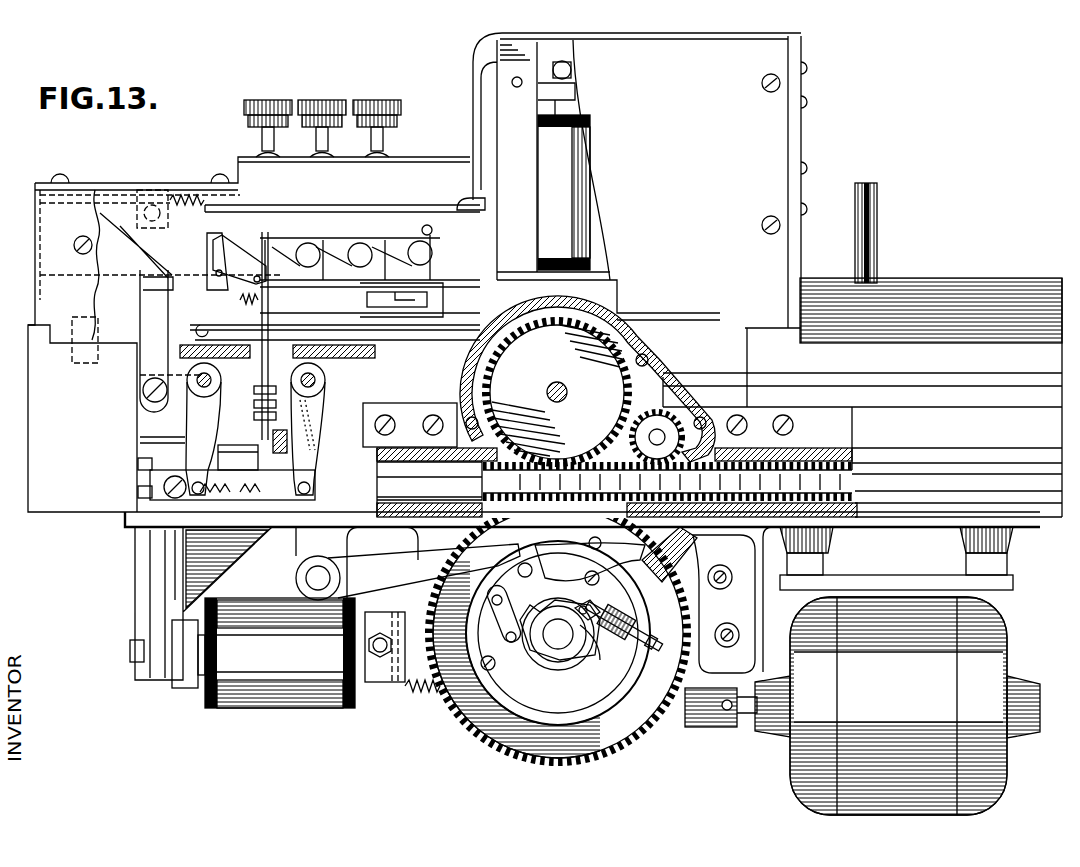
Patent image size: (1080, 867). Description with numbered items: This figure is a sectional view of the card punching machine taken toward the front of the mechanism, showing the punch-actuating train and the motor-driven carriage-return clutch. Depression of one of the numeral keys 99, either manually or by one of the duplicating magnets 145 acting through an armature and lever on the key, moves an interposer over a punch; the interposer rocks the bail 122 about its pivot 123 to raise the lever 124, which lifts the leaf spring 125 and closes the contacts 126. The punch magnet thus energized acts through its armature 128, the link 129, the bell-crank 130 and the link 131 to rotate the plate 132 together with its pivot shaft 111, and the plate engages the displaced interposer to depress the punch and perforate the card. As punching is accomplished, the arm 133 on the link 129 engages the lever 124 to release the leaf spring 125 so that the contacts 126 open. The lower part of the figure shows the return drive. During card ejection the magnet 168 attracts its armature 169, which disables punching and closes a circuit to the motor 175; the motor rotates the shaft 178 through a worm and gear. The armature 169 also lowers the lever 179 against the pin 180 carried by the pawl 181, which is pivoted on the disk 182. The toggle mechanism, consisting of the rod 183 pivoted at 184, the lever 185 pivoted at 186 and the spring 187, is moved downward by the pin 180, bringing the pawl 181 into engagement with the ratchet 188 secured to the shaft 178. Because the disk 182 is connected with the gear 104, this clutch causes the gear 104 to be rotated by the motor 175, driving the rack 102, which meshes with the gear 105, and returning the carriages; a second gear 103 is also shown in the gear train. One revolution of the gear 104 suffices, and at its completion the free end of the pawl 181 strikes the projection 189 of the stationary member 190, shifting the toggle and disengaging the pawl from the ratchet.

The numeral keys 99 is at (377, 100).
The rack 102 is at (787, 473).
The pinion 103 is at (676, 420).
The gear 104 is at (500, 748).
The gear 105 is at (508, 385).
The shaft 111 is at (155, 205).
The bail 122 is at (207, 254).
The pivot 123 is at (239, 259).
The lever 124 is at (270, 335).
The leaf spring 125 is at (257, 412).
The contacts 126 is at (257, 392).
The armature 128 is at (330, 393).
The link 129 is at (278, 492).
The bell-crank 130 is at (203, 429).
The link 131 is at (154, 341).
The plate 132 is at (115, 195).
The arm 133 is at (252, 463).
The magnets 145 is at (564, 165).
The magnet 168 is at (263, 653).
The armature 169 is at (378, 683).
The motor 175 is at (862, 671).
The shaft 178 is at (550, 640).
The lever 179 is at (408, 572).
The pin 180 is at (518, 572).
The pawl 181 is at (590, 561).
The disk 182 is at (628, 688).
The rod 183 is at (640, 670).
The pivot 184 is at (640, 637).
The lever 185 is at (560, 650).
The pivot 186 is at (500, 636).
The spring 187 is at (595, 613).
The ratchet 188 is at (598, 655).
The projection 189 is at (657, 583).
The stationary member 190 is at (724, 604).